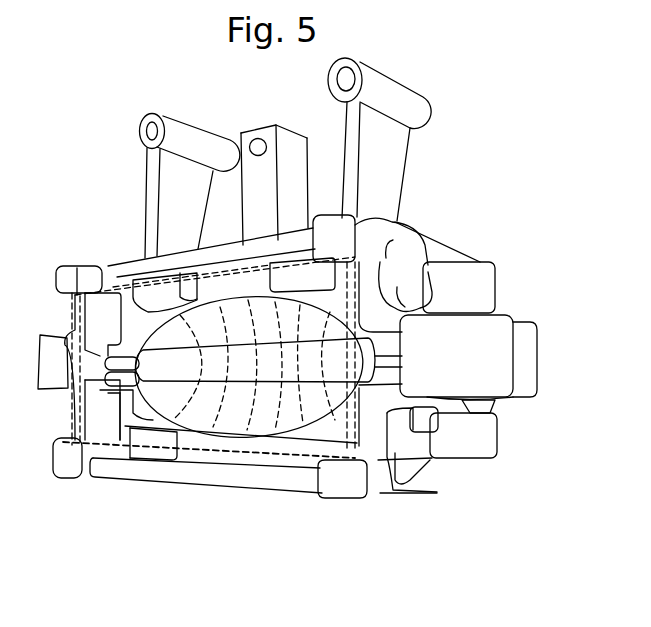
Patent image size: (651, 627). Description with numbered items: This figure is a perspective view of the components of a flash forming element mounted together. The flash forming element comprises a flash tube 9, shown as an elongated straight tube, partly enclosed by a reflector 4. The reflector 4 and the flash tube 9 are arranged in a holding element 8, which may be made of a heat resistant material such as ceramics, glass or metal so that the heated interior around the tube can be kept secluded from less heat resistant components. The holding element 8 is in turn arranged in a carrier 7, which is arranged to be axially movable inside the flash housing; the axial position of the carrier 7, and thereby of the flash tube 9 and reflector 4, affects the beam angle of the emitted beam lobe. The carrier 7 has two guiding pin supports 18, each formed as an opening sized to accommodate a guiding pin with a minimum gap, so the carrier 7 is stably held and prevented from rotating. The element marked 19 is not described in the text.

The reflector 4 is at (243, 410).
The carrier 7 is at (443, 473).
The holding element 8 is at (287, 137).
The flash tube 9 is at (297, 380).
The guiding pin support 18 is at (140, 124).
The support foot 19 is at (135, 422).